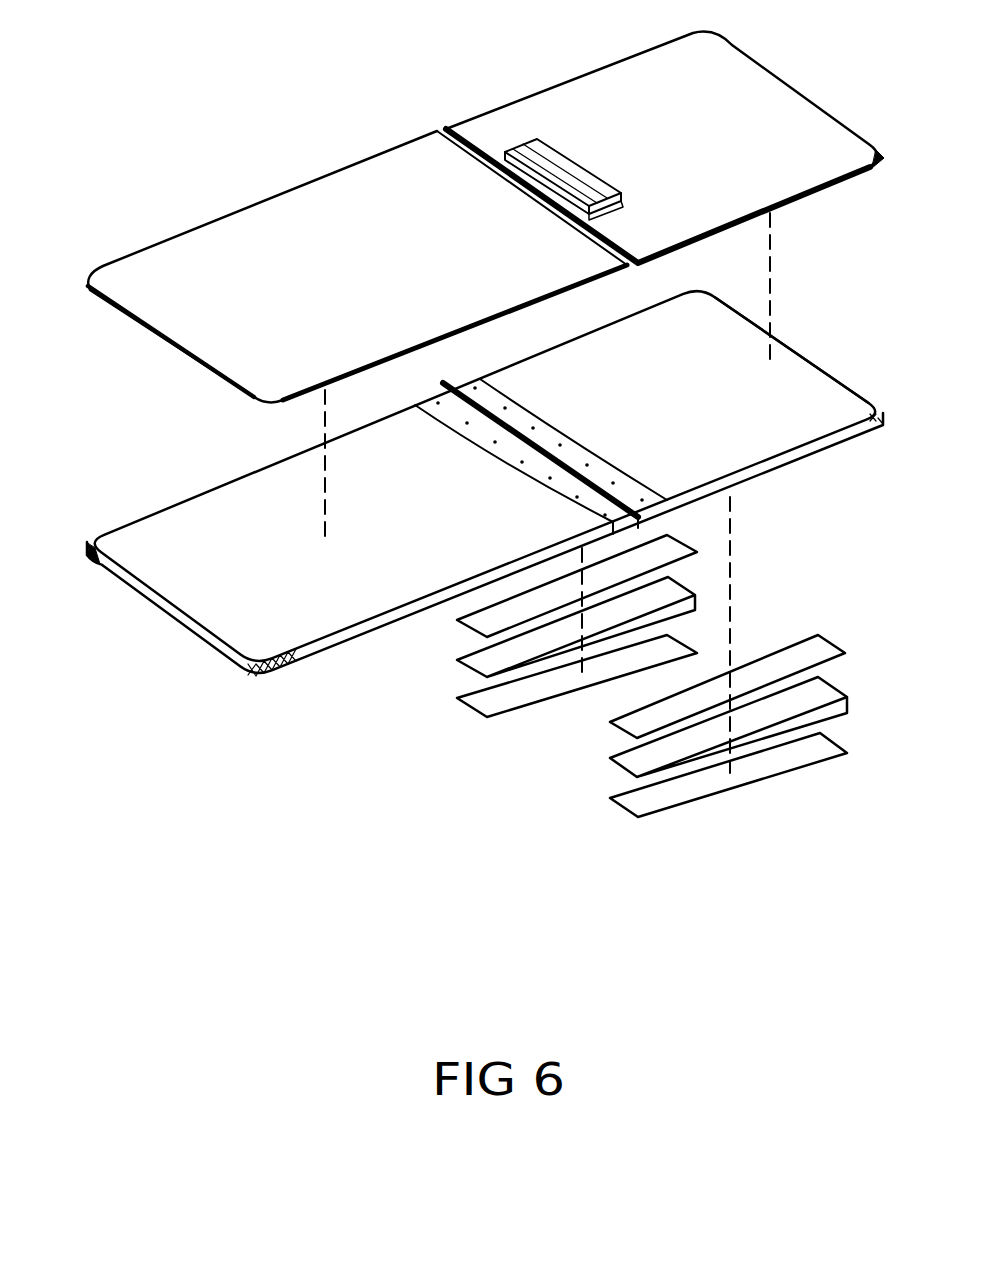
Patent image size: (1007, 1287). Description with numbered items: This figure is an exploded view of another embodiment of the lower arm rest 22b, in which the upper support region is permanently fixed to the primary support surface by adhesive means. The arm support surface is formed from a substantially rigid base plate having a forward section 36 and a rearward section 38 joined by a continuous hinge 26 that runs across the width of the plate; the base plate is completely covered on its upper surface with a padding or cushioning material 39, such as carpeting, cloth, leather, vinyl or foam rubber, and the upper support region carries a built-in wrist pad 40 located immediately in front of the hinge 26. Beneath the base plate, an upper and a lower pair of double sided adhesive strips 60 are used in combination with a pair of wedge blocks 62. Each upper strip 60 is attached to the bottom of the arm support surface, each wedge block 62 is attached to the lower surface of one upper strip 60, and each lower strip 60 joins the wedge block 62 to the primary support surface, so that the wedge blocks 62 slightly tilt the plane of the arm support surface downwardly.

The arm rest 22b is at (148, 442).
The padding or cushioning material 39 is at (490, 118).
The wrist pad 40 is at (570, 165).
The hinge 26 is at (573, 460).
The forward section 36 is at (777, 432).
The rearward section 38 is at (300, 613).
The double sided adhesive strips 60 is at (618, 724).
The wedge blocks 62 is at (618, 762).